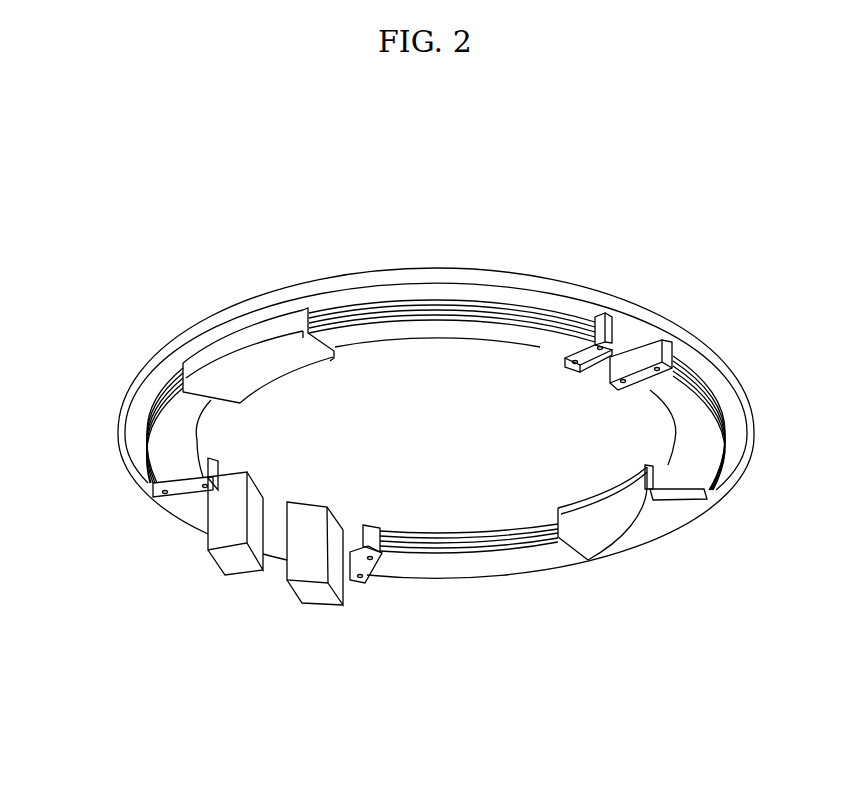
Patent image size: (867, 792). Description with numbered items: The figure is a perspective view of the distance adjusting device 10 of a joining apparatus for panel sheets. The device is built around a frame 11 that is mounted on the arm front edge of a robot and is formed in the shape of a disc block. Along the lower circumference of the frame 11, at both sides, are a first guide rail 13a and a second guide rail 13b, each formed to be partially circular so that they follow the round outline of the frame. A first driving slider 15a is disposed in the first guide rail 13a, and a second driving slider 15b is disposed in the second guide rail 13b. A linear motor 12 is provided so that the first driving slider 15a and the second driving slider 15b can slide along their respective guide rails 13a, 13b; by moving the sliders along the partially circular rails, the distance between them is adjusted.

The distance adjusting device 10 is at (454, 162).
The frame 11 is at (152, 388).
The linear motor 12 is at (238, 558).
The first guide rail 13a is at (705, 440).
The second guide rail 13b is at (165, 440).
The first driving slider 15a is at (635, 528).
The second driving slider 15b is at (232, 370).